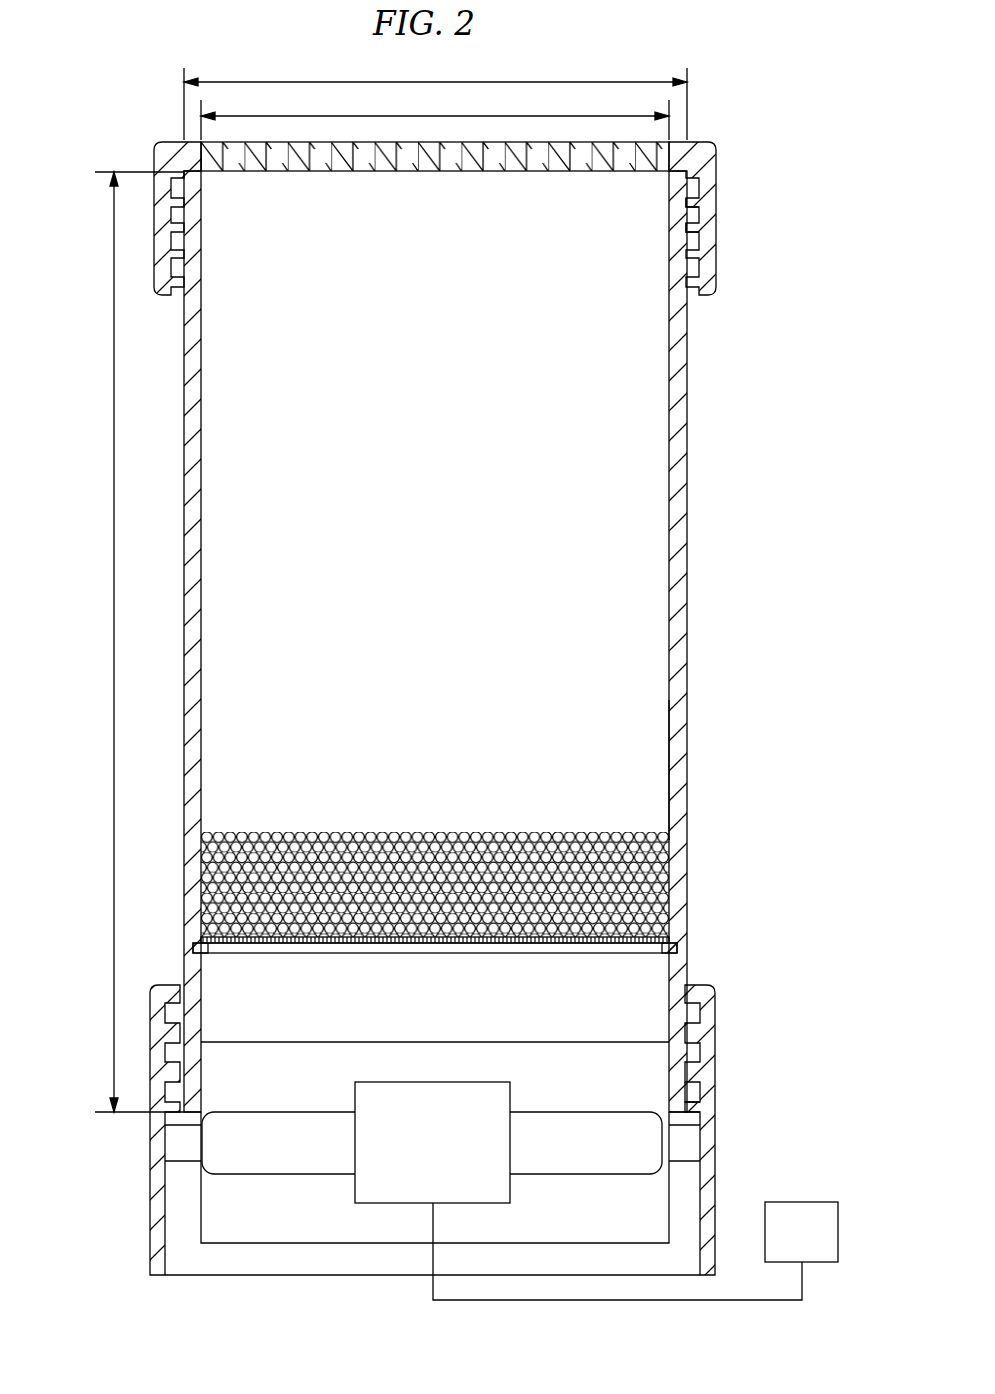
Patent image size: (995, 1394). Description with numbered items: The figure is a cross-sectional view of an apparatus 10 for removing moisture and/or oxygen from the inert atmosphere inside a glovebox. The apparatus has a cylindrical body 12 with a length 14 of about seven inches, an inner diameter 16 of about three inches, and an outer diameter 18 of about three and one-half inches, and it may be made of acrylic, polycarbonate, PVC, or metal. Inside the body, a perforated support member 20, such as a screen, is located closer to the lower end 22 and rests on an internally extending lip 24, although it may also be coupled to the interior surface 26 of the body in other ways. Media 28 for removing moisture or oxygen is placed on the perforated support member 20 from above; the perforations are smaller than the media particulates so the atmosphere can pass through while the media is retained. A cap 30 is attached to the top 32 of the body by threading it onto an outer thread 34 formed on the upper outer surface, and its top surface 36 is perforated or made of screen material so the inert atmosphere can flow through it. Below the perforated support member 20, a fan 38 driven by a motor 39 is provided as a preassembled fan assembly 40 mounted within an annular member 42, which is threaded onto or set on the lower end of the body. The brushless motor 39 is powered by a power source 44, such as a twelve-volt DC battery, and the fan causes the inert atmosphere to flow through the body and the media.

The apparatus 10 is at (712, 650).
The cylindrical body 12 is at (688, 553).
The length 14 is at (114, 620).
The inner diameter 16 is at (440, 116).
The outer diameter 18 is at (437, 82).
The perforated support member 20 is at (628, 945).
The lower end 22 is at (677, 1097).
The lip 24 is at (673, 945).
The interior surface 26 is at (669, 771).
The media 28 is at (640, 867).
The cap 30 is at (707, 163).
The top 32 is at (682, 193).
The outer thread 34 is at (700, 230).
The top surface 36 is at (535, 160).
The fan 38 is at (637, 1145).
The motor 39 is at (380, 1185).
The fan assembly 40 is at (217, 1245).
The annular member 42 is at (707, 1095).
The power source 44 is at (813, 1202).